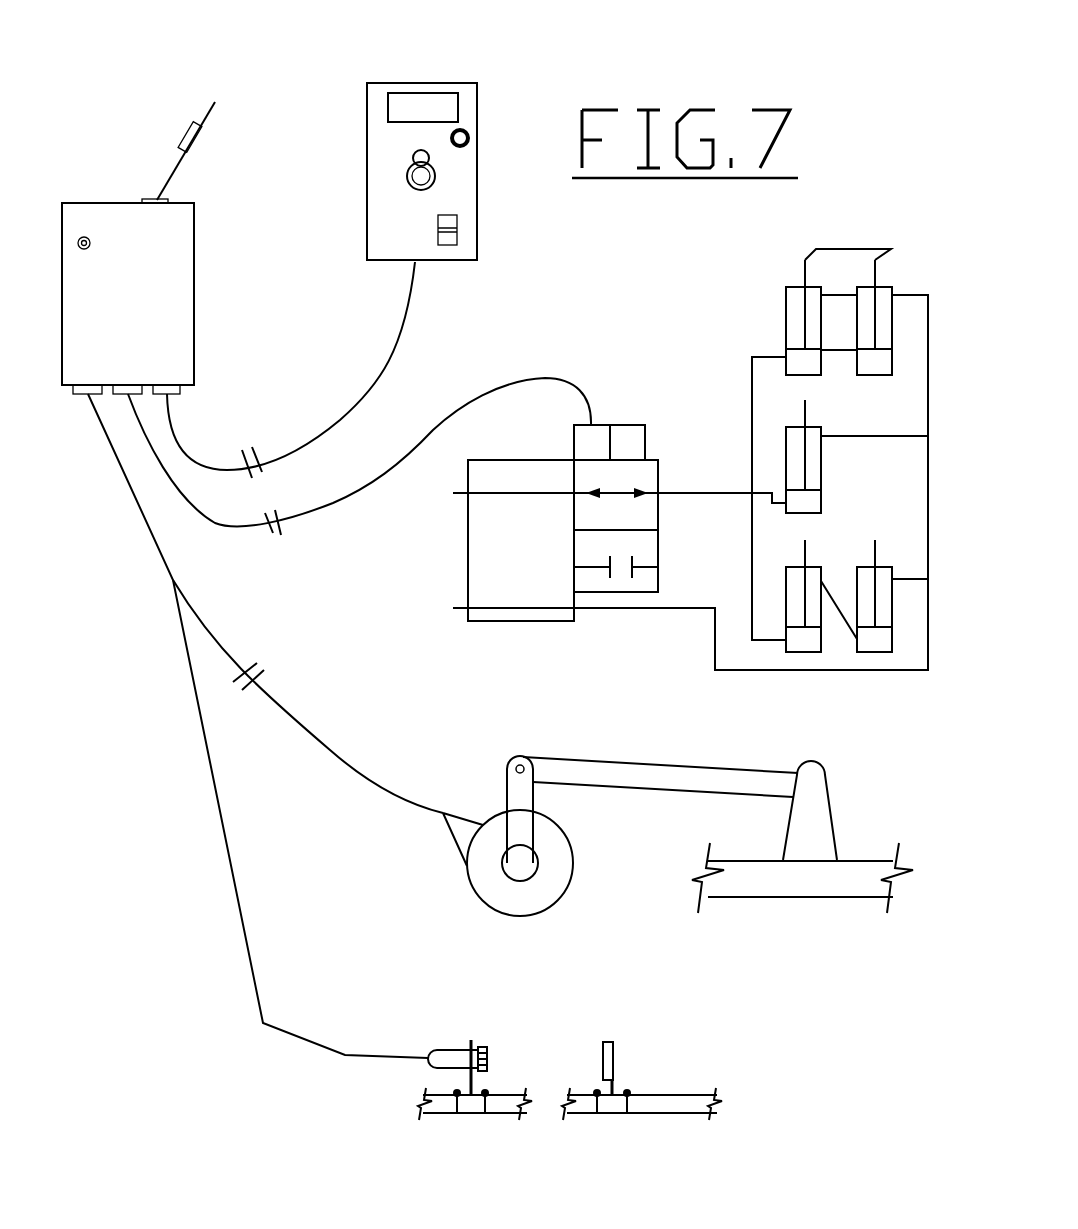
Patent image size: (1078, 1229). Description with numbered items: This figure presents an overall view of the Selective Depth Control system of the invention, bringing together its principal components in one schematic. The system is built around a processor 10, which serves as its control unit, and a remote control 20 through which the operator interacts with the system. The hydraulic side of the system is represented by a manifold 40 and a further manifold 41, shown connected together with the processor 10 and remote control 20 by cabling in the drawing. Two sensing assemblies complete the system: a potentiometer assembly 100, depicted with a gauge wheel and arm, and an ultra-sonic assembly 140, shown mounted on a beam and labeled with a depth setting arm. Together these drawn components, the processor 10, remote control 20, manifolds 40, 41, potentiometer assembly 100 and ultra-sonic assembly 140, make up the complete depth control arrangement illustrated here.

The processor 10 is at (111, 197).
The remote control 20 is at (427, 80).
The manifold 40 is at (522, 630).
The manifold 41 is at (636, 418).
The potentiometer assembly 100 is at (549, 750).
The ultra-sonic assembly 140 is at (548, 1030).